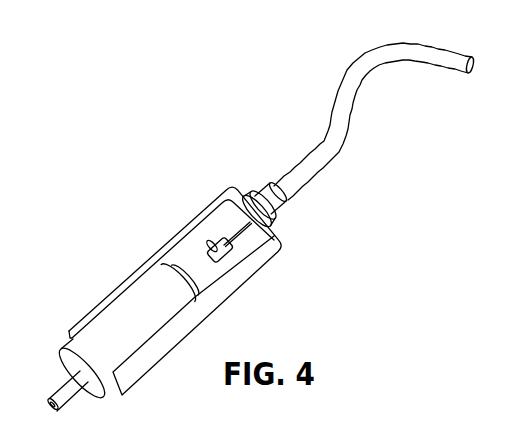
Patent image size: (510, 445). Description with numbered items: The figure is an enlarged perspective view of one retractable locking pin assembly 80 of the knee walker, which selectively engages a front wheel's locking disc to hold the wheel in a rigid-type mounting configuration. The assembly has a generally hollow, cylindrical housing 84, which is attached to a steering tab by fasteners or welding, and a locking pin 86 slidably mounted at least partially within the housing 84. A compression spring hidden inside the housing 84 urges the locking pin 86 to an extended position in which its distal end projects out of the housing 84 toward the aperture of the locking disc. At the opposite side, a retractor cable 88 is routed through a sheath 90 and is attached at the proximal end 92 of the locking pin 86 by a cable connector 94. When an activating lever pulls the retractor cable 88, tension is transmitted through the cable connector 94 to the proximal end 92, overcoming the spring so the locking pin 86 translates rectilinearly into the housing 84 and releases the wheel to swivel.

The retractable locking pin assembly 80 is at (181, 138).
The housing 84 is at (132, 307).
The locking pin 86 is at (57, 395).
The retractor cable 88 is at (233, 222).
The sheath 90 is at (334, 130).
The proximal end 92 is at (187, 268).
The cable connector 94 is at (183, 250).